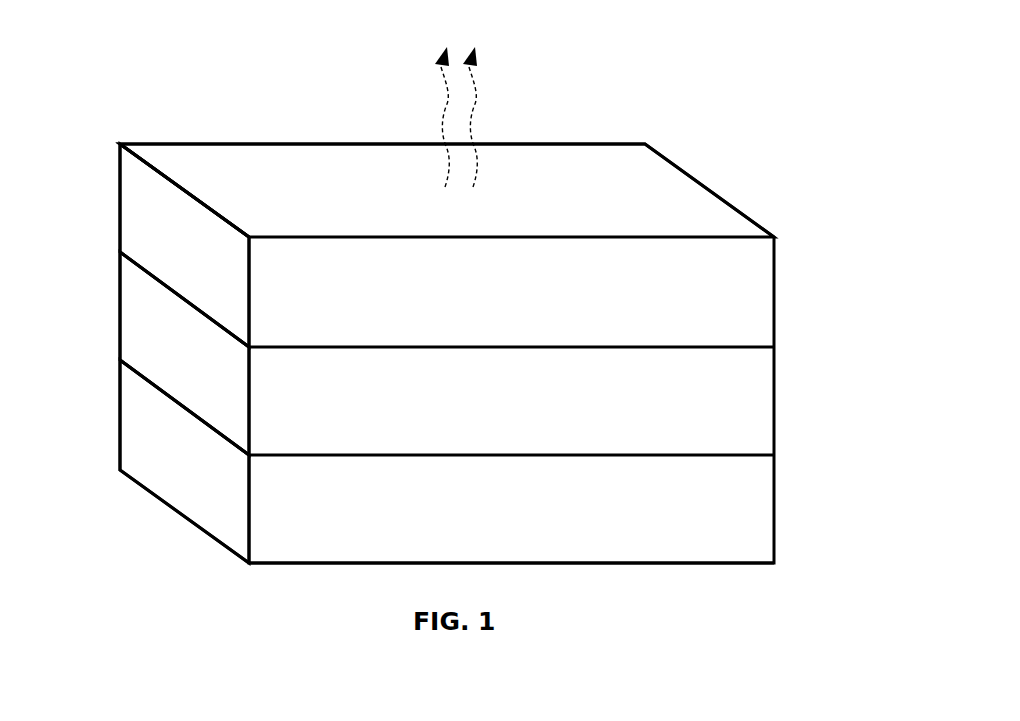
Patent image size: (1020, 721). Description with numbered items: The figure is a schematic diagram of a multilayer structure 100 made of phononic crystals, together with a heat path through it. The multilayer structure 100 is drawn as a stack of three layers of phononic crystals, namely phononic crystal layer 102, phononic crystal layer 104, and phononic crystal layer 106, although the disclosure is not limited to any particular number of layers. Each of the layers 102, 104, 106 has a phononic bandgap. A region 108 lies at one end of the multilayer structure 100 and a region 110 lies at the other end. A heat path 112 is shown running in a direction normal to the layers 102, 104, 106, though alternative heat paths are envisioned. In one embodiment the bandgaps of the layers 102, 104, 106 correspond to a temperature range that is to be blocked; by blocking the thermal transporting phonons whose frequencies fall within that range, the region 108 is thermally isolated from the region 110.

The multilayer structure 100 is at (201, 77).
The phononic crystal layer 102 is at (147, 219).
The phononic crystal layer 104 is at (147, 317).
The phononic crystal layer 106 is at (147, 444).
The region 108 is at (672, 183).
The region 110 is at (688, 563).
The heat path 112 is at (442, 178).